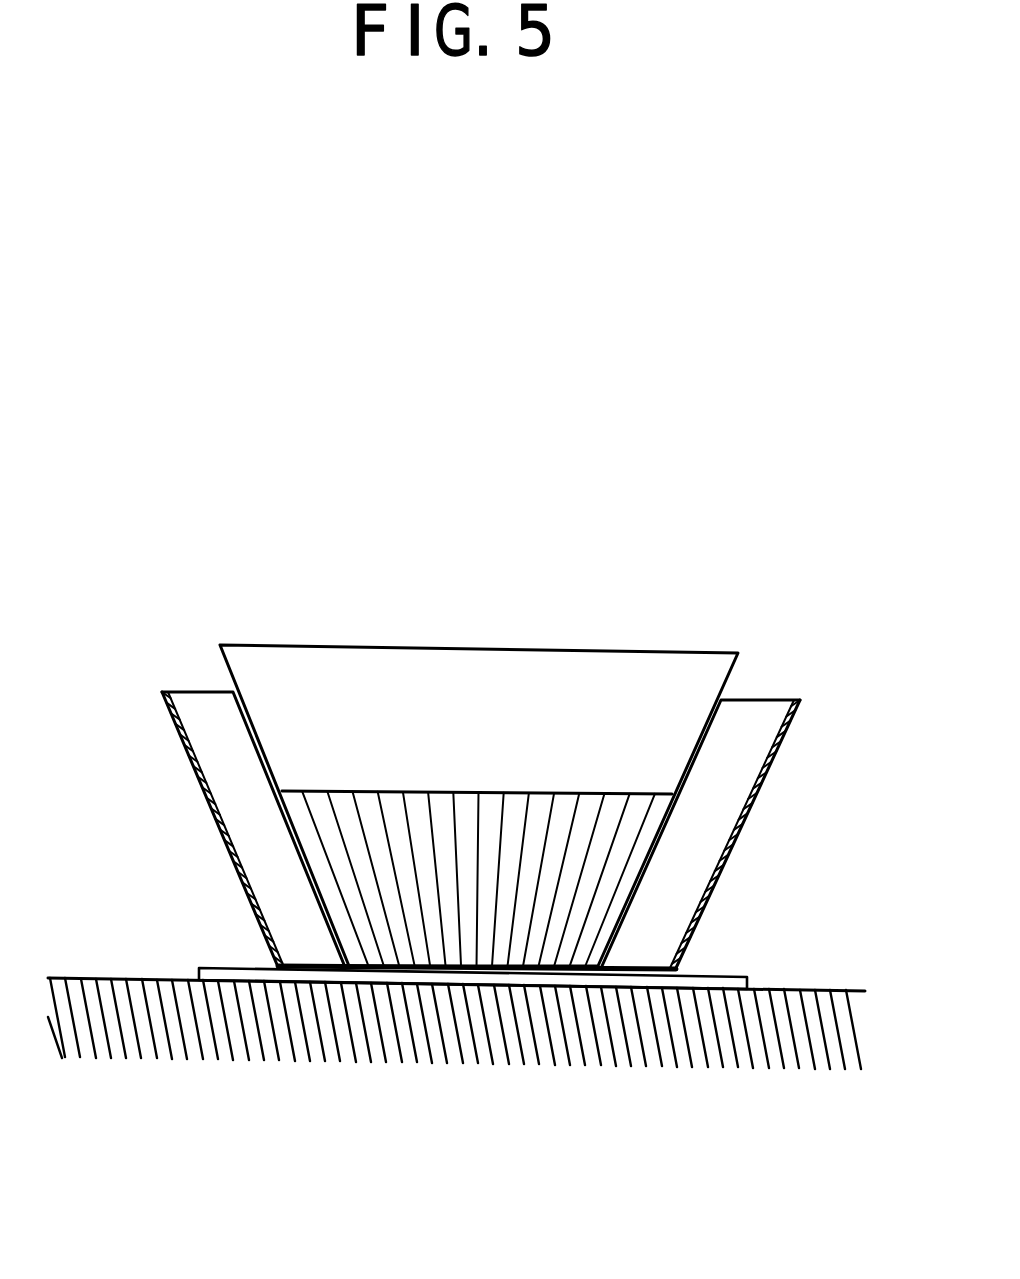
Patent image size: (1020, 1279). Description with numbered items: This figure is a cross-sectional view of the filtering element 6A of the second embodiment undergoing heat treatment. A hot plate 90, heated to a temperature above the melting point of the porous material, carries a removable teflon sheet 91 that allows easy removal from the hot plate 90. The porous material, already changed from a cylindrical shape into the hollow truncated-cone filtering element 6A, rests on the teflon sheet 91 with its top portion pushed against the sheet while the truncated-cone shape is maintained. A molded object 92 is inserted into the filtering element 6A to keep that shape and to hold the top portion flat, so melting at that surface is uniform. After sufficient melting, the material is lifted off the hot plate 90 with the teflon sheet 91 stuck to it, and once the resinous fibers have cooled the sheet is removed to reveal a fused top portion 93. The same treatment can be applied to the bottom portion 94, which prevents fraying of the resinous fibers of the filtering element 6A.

The hot plate 90 is at (463, 1047).
The teflon sheet 91 is at (207, 968).
The molded object 92 is at (458, 667).
The fused top portion 93 is at (635, 967).
The bottom portion 94 is at (753, 700).
The filtering element 6A is at (235, 820).